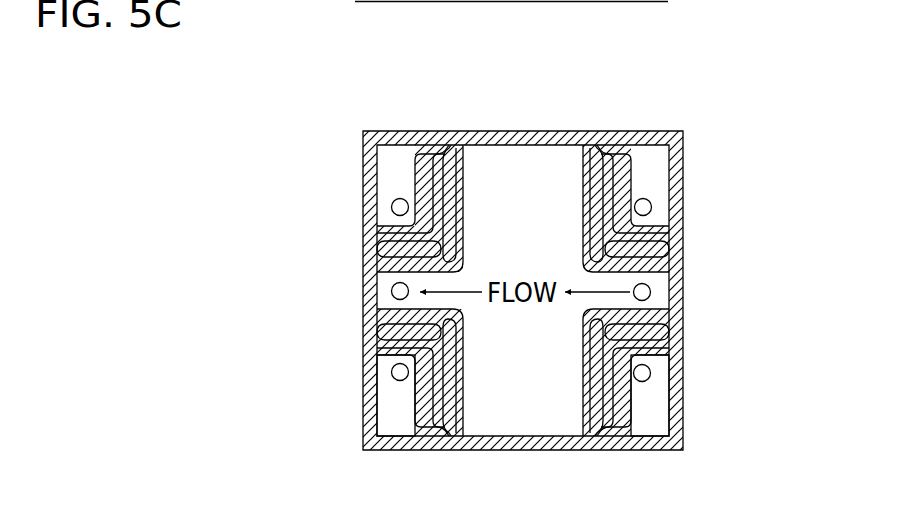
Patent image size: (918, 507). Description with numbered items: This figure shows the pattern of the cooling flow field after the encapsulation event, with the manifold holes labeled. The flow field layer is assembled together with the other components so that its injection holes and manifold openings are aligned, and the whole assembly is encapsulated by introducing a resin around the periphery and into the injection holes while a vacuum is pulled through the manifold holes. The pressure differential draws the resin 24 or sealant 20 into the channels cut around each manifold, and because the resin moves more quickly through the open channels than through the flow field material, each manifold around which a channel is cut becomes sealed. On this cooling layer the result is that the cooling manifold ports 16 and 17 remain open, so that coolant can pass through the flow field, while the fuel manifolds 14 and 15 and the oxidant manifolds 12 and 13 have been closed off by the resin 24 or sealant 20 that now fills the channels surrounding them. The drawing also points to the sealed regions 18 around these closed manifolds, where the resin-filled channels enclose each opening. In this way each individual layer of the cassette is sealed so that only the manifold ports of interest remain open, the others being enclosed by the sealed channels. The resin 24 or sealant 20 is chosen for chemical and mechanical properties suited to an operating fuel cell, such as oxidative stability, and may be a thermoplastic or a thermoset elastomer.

The oxidant manifold 12 is at (651, 373).
The oxidant manifold 13 is at (391, 207).
The fuel manifold 14 is at (652, 207).
The fuel manifold 15 is at (391, 372).
The cooling manifold port 16 is at (651, 292).
The cooling manifold port 17 is at (391, 291).
The seal lips 18 is at (452, 403).
The sealant 20 is at (411, 412).
The resin 24 is at (673, 153).